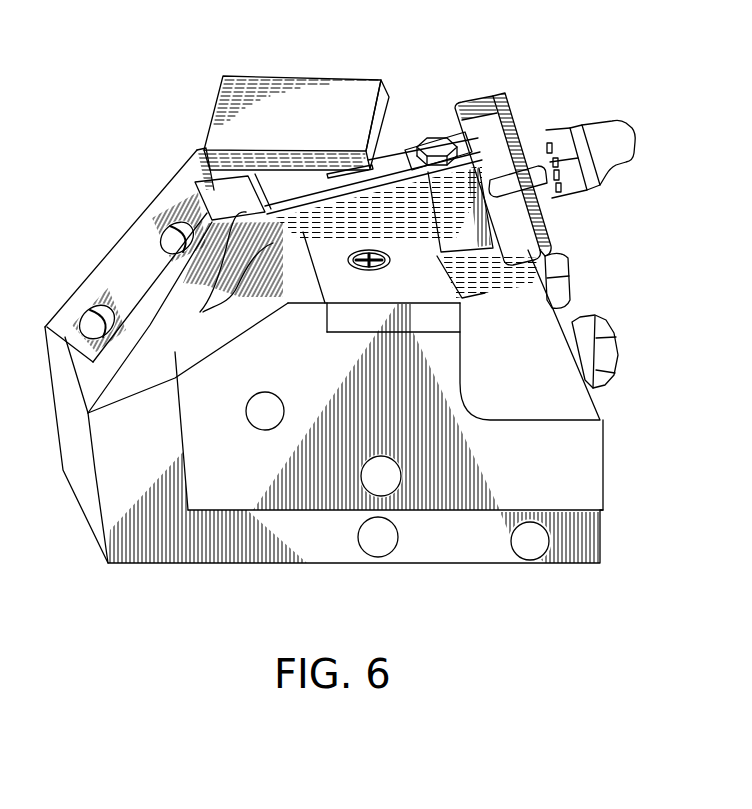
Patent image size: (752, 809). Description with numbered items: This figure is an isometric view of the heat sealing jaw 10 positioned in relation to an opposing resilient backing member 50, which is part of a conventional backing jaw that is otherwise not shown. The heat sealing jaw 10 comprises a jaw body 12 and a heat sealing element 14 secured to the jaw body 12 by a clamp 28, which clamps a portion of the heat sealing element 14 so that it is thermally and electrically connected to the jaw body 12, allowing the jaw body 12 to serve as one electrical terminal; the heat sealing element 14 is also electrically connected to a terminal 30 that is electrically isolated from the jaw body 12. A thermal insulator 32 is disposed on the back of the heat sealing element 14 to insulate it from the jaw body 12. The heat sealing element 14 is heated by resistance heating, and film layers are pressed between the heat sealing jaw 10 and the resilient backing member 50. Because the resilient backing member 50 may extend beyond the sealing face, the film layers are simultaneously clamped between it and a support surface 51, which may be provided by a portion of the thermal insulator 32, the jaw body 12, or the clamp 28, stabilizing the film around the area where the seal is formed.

The heat sealing jaw 10 is at (140, 82).
The jaw body 12 is at (143, 547).
The heat sealing element 14 is at (352, 208).
The clamp 28 is at (125, 290).
The terminal 30 is at (478, 130).
The thermal insulator 32 is at (482, 337).
The resilient backing member 50 is at (353, 100).
The support surface 51 is at (283, 280).